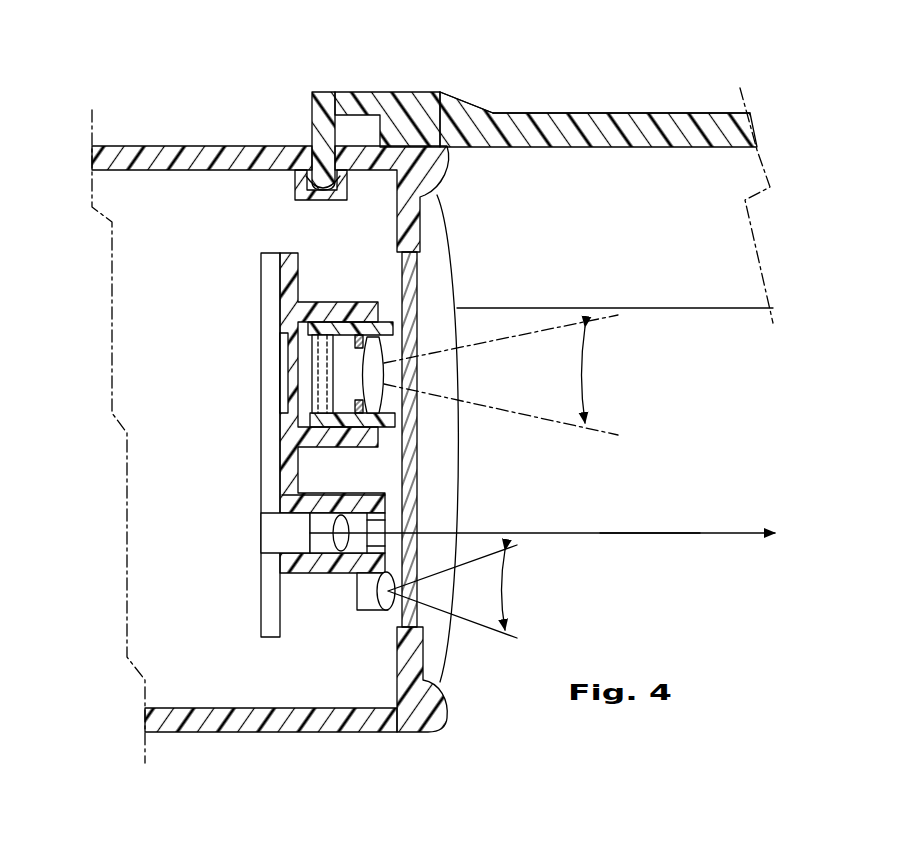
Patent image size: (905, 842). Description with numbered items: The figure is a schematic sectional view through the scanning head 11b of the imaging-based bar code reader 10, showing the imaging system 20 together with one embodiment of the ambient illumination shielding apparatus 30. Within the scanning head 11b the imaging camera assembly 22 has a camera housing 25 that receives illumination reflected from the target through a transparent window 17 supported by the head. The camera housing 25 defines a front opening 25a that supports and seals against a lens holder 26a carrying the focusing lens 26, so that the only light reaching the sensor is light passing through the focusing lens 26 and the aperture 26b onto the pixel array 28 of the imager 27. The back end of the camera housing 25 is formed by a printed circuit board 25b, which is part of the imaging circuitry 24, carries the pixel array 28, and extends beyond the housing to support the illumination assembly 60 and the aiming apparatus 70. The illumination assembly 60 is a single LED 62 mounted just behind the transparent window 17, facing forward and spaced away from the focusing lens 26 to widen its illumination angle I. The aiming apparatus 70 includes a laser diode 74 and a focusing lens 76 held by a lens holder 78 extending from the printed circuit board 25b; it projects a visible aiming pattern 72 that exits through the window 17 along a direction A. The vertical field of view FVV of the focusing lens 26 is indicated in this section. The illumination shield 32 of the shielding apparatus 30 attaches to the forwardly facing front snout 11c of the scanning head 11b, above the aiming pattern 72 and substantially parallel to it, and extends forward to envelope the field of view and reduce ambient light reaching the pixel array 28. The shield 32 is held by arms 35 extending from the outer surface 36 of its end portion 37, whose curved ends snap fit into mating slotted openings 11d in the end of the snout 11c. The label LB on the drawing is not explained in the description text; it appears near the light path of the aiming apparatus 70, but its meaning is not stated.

The imaging-based bar code reader 10 is at (296, 411).
The scanning head 11b is at (233, 737).
The front snout 11c is at (440, 683).
The slotted openings 11d is at (327, 188).
The transparent window 17 is at (407, 448).
The imaging system 20 is at (414, 458).
The imaging camera assembly 22 is at (258, 292).
The imaging circuitry 24 is at (260, 338).
The camera housing 25 is at (313, 320).
The front opening 25a is at (433, 280).
The printed circuit board 25b is at (275, 477).
The focusing lens 26 is at (387, 378).
The lens holder 26a is at (332, 430).
The aperture 26b is at (357, 403).
The imager 27 is at (277, 365).
The pixel array 28 is at (283, 390).
The ambient illumination shielding apparatus 30 is at (503, 191).
The illumination shield 32 is at (657, 110).
The arms 35 is at (323, 133).
The outer surface 36 is at (558, 113).
The end portion 37 is at (407, 140).
The illumination assembly 60 is at (352, 612).
The LED 62 is at (367, 593).
The aiming apparatus 70 is at (250, 533).
The aiming pattern 72 is at (698, 536).
The laser diode 74 is at (293, 533).
The focusing lens 76 is at (342, 530).
The lens holder 78 is at (380, 530).
The light beam LB is at (318, 552).
The direction A is at (628, 533).
The illumination angle I is at (454, 591).
The vertical field of view FVV is at (502, 375).